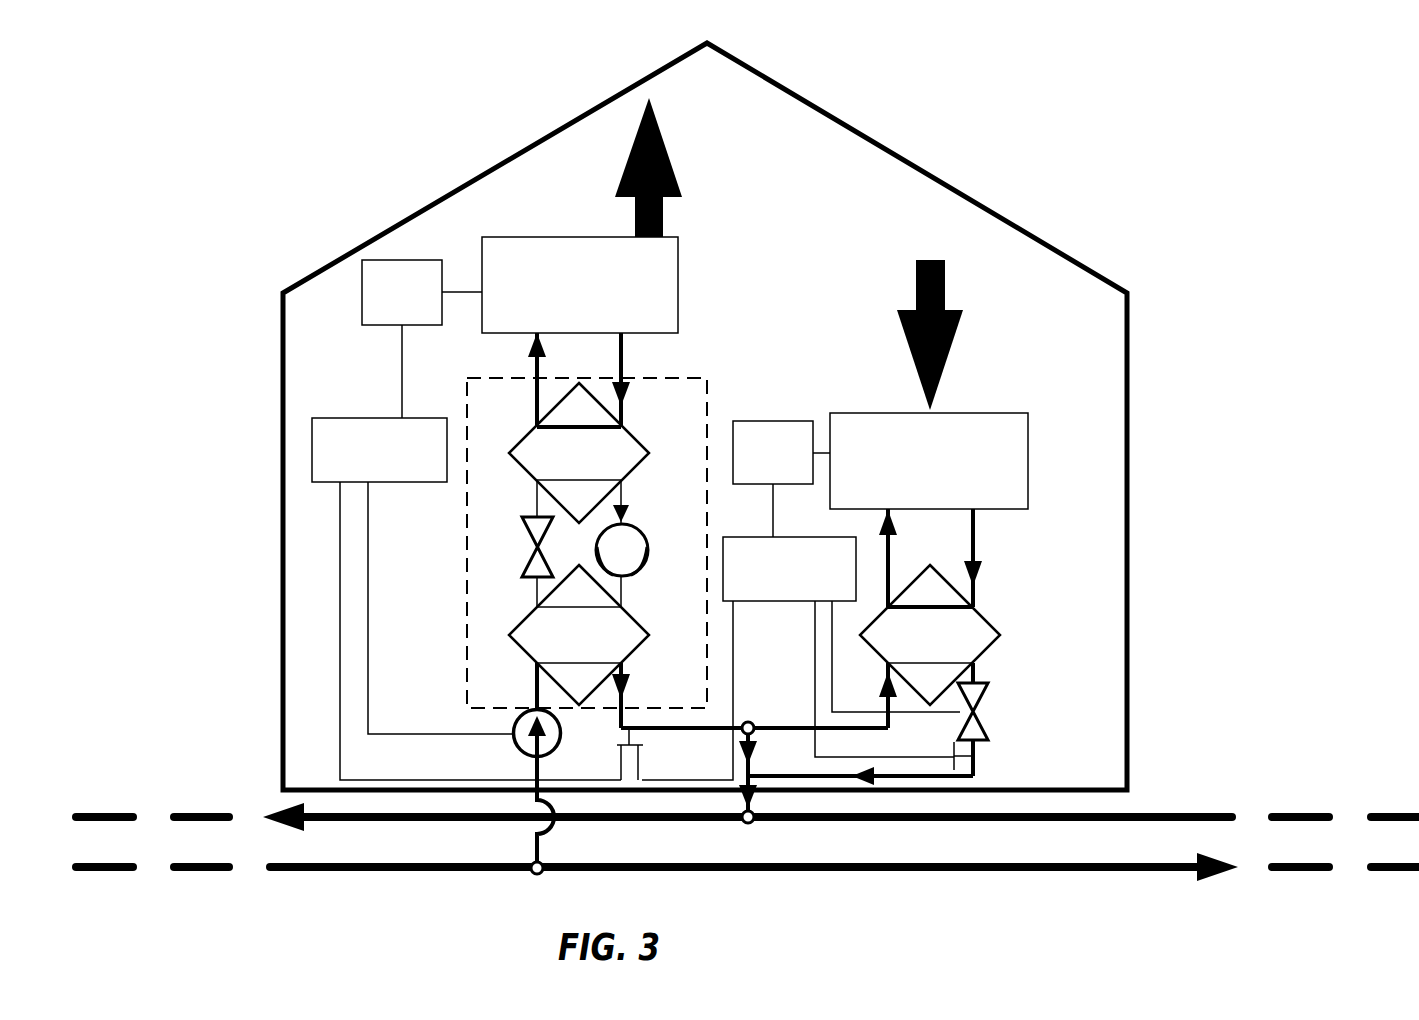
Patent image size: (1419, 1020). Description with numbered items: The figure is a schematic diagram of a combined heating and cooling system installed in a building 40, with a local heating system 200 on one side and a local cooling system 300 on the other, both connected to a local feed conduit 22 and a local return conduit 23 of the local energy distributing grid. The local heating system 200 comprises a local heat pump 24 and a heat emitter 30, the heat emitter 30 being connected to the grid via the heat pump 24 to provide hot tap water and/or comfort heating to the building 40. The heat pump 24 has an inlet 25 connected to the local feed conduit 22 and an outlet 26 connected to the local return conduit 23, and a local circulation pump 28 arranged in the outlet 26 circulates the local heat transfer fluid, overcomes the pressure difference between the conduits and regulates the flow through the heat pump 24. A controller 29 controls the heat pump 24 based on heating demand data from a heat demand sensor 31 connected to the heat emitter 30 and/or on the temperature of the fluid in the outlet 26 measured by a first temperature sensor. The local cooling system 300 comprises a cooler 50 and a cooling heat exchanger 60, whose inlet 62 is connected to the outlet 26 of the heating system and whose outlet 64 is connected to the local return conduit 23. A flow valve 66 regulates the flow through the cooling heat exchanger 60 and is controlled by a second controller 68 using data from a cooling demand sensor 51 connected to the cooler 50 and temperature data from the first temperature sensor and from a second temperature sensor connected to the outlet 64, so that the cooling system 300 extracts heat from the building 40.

The local feed conduit 22 is at (400, 872).
The local return conduit 23 is at (1175, 813).
The local heat pump 24 is at (551, 530).
The inlet 25 is at (537, 665).
The outlet 26 is at (628, 665).
The local circulation pump 28 is at (513, 737).
The controller 29 is at (310, 425).
The heat emitter 30 is at (528, 250).
The heat demand sensor 31 is at (372, 283).
The building 40 is at (300, 328).
The cooler 50 is at (972, 437).
The cooling demand sensor 51 is at (762, 433).
The cooling heat exchanger 60 is at (985, 635).
The inlet 62 is at (888, 672).
The outlet 64 is at (975, 665).
The flow valve 66 is at (990, 695).
The second controller 68 is at (723, 548).
The local heating system 200 is at (550, 482).
The local cooling system 300 is at (930, 501).